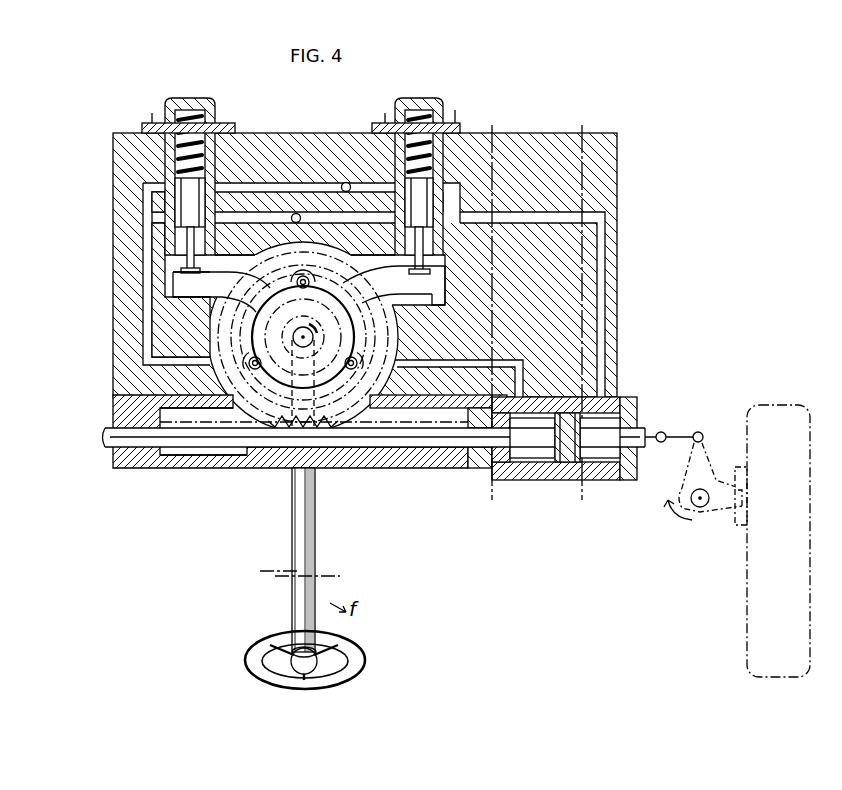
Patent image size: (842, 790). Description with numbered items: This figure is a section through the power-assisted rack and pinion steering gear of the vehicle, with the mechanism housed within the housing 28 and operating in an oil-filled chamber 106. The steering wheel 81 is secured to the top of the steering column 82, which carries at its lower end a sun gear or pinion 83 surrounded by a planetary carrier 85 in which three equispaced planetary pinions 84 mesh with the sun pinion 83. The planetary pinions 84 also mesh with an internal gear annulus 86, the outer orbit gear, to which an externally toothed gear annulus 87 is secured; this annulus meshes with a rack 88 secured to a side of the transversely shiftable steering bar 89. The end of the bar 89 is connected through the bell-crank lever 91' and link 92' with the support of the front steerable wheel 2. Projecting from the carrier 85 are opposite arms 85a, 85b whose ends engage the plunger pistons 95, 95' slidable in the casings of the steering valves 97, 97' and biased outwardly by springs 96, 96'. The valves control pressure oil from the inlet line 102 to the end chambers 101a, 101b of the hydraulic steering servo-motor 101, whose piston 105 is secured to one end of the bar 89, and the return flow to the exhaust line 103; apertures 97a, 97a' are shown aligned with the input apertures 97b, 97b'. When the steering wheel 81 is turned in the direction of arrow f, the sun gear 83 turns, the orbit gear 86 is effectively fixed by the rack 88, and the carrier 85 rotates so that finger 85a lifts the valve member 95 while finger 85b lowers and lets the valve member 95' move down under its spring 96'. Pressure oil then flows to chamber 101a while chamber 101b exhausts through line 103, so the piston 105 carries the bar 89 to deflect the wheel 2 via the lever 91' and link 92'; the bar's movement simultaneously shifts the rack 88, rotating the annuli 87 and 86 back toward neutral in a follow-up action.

The housing 28 is at (540, 137).
The steering valve 97 is at (202, 167).
The steering valve 97' is at (429, 161).
The spring 96 is at (188, 111).
The spring 96' is at (412, 111).
The aperture 97a is at (143, 235).
The aperture 97a' is at (449, 214).
The input aperture 97b is at (221, 188).
The input aperture 97b' is at (401, 188).
The exhaust line 103 is at (322, 184).
The inlet line 102 is at (279, 218).
The plunger piston 95 is at (235, 242).
The plunger piston 95' is at (414, 242).
The externally toothed gear annulus 87 is at (240, 273).
The internal gear annulus 86 is at (348, 283).
The arm 85a is at (191, 286).
The arm 85b is at (437, 280).
The oil-filled chamber 106 is at (433, 295).
The planetary pinion 84 is at (276, 330).
The sun gear 83 is at (320, 331).
The planetary carrier 85 is at (327, 416).
The rack 88 is at (235, 422).
The steering bar 89 is at (247, 450).
The steering column 82 is at (312, 497).
The steering wheel 81 is at (355, 650).
The piston 105 is at (564, 495).
The hydraulic steering servo-motor 101 is at (569, 478).
The end chamber 101a is at (524, 460).
The end chamber 101b is at (603, 462).
The link 92' is at (674, 422).
The bell-crank lever 91' is at (703, 481).
The front steerable wheel 2 is at (811, 478).